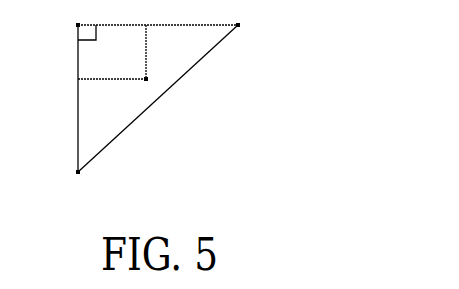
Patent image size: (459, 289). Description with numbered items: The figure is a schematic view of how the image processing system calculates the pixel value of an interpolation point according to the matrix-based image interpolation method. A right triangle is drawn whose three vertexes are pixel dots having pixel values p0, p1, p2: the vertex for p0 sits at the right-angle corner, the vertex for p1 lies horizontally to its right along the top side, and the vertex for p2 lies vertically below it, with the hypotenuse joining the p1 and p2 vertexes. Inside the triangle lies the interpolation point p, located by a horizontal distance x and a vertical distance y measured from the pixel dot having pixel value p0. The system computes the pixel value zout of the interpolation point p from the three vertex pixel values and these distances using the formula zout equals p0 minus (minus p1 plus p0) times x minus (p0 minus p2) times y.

The pixel value of first triangle vertex p0 is at (83, 14).
The pixel value of second triangle vertex p1 is at (254, 27).
The pixel value of third triangle vertex p2 is at (85, 188).
The interpolation point p is at (154, 81).
The horizontal distance x is at (129, 52).
The vertical distance y is at (112, 64).